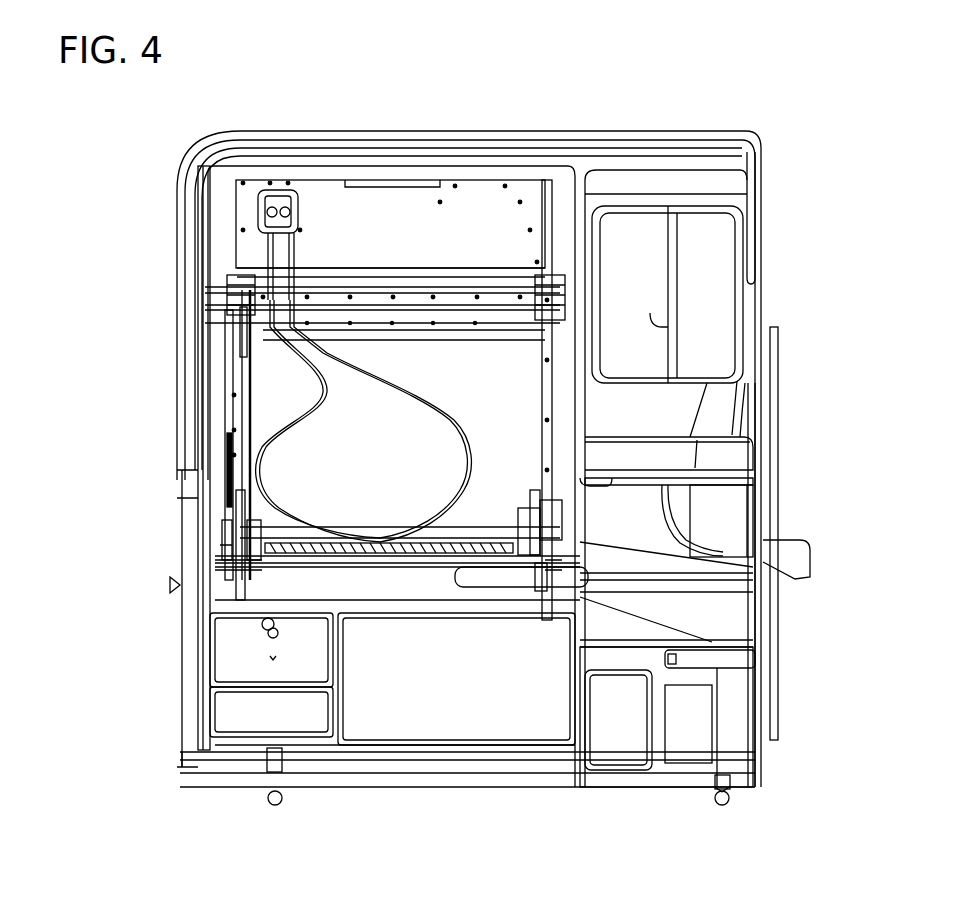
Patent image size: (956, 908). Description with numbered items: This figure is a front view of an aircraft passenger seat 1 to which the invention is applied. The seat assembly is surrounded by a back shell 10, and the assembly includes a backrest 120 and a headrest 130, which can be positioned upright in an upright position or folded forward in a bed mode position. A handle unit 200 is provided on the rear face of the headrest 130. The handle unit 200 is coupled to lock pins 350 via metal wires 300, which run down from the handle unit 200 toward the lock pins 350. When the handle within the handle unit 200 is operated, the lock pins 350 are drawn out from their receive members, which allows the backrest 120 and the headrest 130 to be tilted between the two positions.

The aircraft passenger seat 1 is at (611, 69).
The back shell 10 is at (487, 131).
The backrest 120 is at (350, 438).
The headrest 130 is at (388, 222).
The handle unit 200 is at (278, 190).
The metal wires 300 is at (247, 480).
The lock pins 350 is at (458, 578).